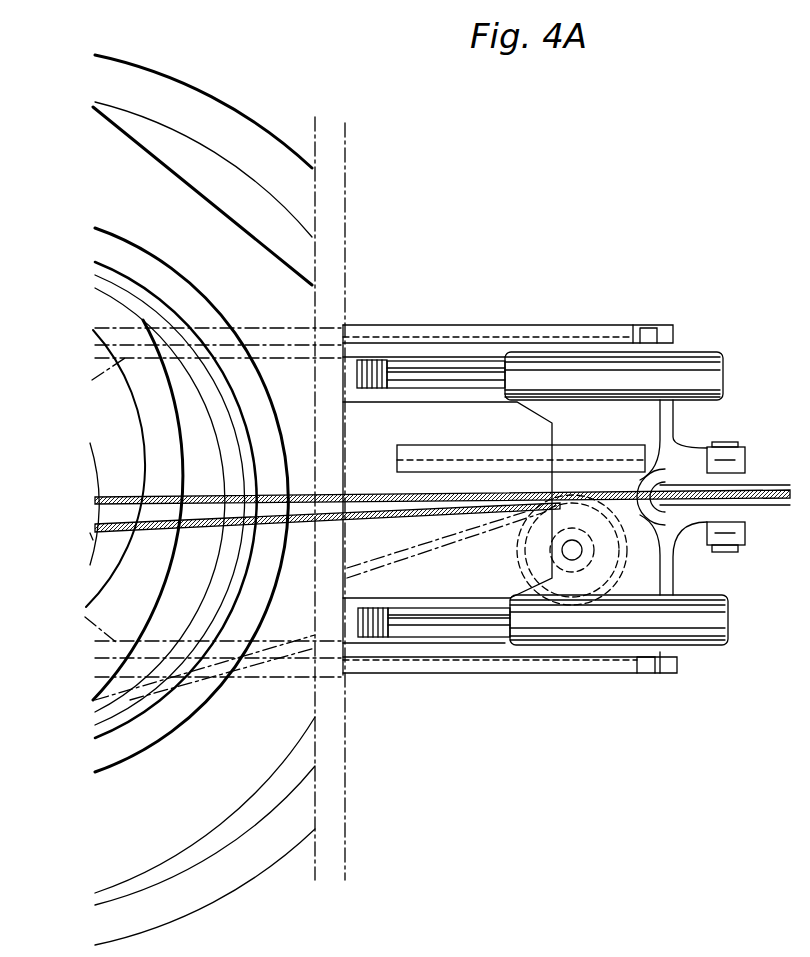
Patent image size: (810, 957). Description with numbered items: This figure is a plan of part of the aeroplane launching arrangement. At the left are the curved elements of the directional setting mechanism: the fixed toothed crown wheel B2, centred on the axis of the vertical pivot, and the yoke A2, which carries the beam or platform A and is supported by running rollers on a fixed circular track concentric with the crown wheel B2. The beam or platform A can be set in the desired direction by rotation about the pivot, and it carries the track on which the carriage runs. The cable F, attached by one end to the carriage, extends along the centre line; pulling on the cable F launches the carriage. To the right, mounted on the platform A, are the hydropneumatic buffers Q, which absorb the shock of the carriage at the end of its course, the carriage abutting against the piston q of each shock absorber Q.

The yoke A2 is at (93, 68).
The fixed toothed crown wheel B2 is at (168, 205).
The beam or platform A is at (262, 675).
The cable F is at (172, 497).
The piston q is at (430, 623).
The hydropneumatic buffers Q is at (705, 628).